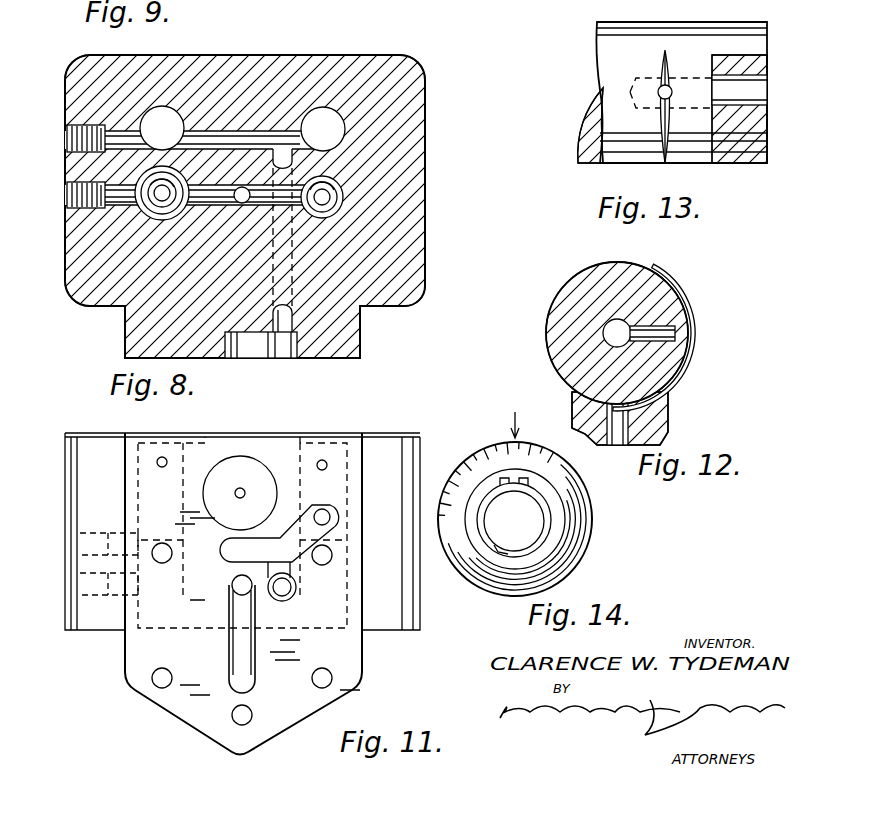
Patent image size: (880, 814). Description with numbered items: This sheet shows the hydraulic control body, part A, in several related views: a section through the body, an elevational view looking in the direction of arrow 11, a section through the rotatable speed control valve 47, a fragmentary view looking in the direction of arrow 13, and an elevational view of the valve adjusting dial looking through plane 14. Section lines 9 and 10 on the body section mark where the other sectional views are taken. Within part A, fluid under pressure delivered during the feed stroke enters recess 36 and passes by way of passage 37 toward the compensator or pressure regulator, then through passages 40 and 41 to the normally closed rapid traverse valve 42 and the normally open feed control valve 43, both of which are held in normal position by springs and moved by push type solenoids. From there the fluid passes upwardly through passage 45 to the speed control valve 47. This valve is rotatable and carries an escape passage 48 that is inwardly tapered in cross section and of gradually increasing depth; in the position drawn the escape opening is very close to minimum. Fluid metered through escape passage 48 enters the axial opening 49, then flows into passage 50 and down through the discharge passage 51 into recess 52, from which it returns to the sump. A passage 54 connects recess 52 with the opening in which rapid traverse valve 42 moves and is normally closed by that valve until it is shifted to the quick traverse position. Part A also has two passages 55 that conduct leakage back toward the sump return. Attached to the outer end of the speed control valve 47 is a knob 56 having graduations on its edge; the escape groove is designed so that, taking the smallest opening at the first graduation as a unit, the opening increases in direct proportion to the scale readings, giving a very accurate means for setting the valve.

In FIG. 8, the part A is at (98, 292).
In FIG. 11, the part A is at (242, 531).
In FIG. 8, the section line 9 is at (44, 150).
In FIG. 8, the section line 10 is at (45, 193).
In FIG. 8, the arrow 11 is at (303, 398).
In FIG. 12, the arrow 13 is at (790, 333).
In FIG. 8, the plane 14 is at (320, 26).
In FIG. 11, the recess 36 is at (238, 645).
In FIG. 11, the passage 37 is at (232, 585).
In FIG. 8, the passage 40 is at (242, 203).
In FIG. 8, the passage 41 is at (213, 201).
In FIG. 8, the rapid traverse valve 42 is at (329, 216).
In FIG. 8, the feed control valve 43 is at (156, 214).
In FIG. 12, the passage 45 is at (626, 420).
In FIG. 13, the speed control valve 47 is at (606, 50).
In FIG. 12, the speed control valve 47 is at (562, 312).
In FIG. 14, the speed control valve 47 is at (514, 517).
In FIG. 13, the escape passage 48 is at (662, 72).
In FIG. 12, the escape passage 48 is at (683, 370).
In FIG. 13, the axial opening 49 is at (750, 95).
In FIG. 12, the axial opening 49 is at (622, 334).
In FIG. 8, the passage 50 is at (233, 130).
In FIG. 8, the discharge passage 51 is at (288, 315).
In FIG. 11, the discharge passage 51 is at (282, 598).
In FIG. 8, the recess 52 is at (260, 350).
In FIG. 11, the recess 52 is at (290, 562).
In FIG. 11, the passage 54 is at (330, 514).
In FIG. 11, the passages 55 is at (166, 459).
In FIG. 14, the knob 56 is at (576, 525).